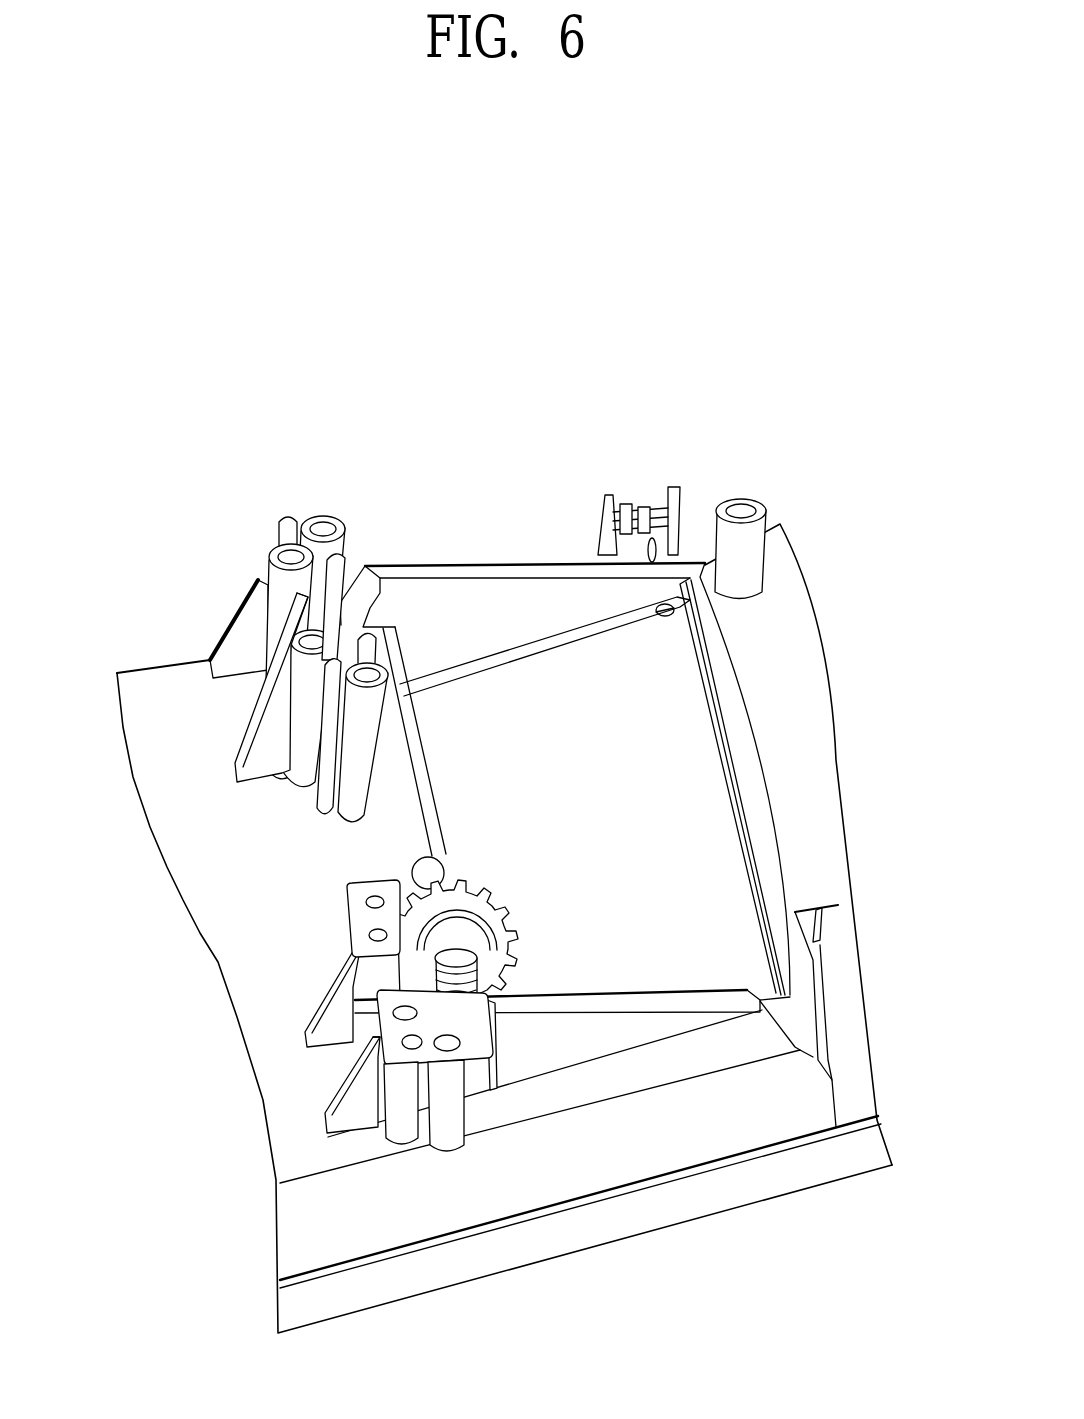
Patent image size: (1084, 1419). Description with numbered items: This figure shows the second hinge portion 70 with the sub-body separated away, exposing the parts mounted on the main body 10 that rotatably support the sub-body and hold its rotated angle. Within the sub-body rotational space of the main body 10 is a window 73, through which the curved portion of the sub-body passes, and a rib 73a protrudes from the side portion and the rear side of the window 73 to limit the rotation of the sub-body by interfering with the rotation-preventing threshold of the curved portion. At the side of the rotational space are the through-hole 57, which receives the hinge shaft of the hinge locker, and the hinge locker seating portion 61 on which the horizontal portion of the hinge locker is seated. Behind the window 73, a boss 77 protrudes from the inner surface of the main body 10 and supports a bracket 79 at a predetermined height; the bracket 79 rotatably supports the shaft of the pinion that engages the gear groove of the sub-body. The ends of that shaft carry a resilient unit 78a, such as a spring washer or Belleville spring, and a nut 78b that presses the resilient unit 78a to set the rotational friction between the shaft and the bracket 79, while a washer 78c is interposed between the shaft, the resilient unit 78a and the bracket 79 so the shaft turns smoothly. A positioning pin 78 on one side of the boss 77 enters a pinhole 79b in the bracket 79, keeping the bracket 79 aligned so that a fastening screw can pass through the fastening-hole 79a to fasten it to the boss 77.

The second hinge portion 70 is at (863, 403).
The main body 10 is at (778, 707).
The hinge locker seating portion 61 is at (642, 497).
The through-hole 57 is at (657, 636).
The window 73 is at (625, 837).
The rib 73a is at (388, 827).
The boss 77 is at (300, 763).
The positioning pin 78 is at (333, 703).
The resilient unit 78a is at (390, 993).
The nut 78b is at (377, 1040).
The washer 78c is at (350, 952).
The bracket 79 is at (493, 1030).
The fastening-hole 79a is at (457, 1025).
The pinhole 79b is at (385, 1062).